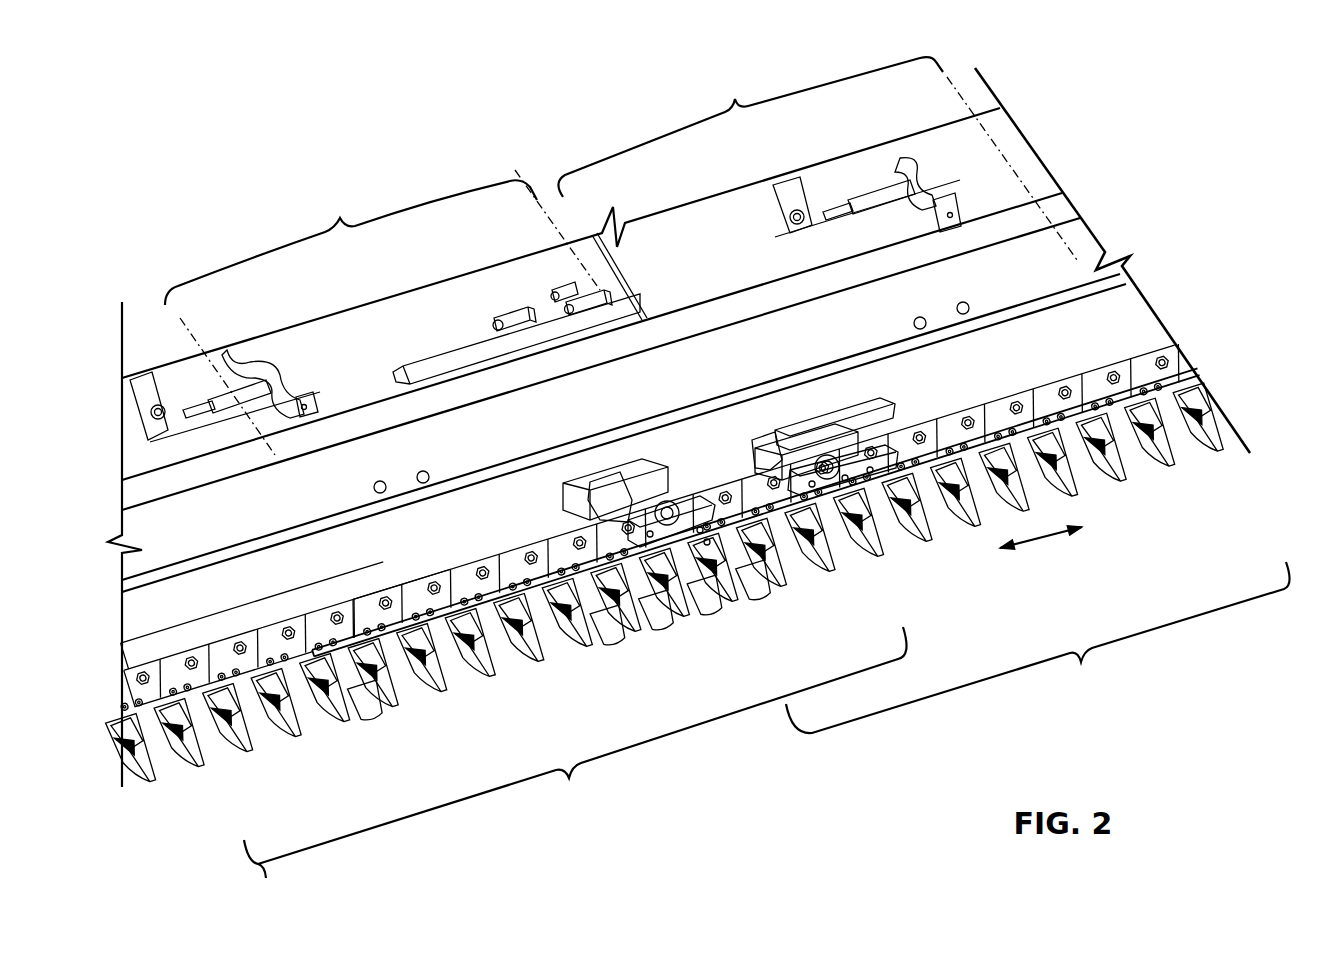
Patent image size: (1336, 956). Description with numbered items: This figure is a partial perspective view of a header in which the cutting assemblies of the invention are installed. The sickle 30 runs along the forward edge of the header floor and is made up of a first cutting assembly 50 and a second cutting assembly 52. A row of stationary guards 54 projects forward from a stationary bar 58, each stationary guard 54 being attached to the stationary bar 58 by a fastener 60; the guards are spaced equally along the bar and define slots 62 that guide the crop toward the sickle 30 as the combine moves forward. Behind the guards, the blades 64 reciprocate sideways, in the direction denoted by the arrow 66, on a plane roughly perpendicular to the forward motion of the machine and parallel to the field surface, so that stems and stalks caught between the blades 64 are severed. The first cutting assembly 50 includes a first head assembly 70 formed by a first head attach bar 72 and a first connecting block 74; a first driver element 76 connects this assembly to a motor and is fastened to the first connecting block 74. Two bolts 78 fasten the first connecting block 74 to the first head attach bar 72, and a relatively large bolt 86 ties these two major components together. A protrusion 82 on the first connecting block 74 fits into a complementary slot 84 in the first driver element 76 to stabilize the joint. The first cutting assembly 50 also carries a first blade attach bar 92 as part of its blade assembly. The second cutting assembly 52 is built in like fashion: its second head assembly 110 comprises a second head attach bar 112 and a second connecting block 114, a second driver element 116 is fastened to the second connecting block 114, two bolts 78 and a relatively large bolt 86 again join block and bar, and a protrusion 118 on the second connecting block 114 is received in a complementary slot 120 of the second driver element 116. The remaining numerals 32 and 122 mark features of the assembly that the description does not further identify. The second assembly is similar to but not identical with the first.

The sickle 30 is at (160, 745).
The cutterbar mounting plate 32 is at (208, 662).
The first cutting assembly 50 is at (1038, 647).
The second cutting assembly 52 is at (575, 752).
The stationary guard 54 is at (385, 703).
The stationary bar 58 is at (463, 577).
The fastener 60 is at (522, 528).
The slot 62 is at (609, 642).
The blade 64 is at (260, 708).
The arrow 66 is at (1042, 550).
The first head assembly 70 is at (750, 127).
The first head attach bar 72 is at (1005, 430).
The first connecting block 74 is at (840, 456).
The first driver element 76 is at (806, 420).
The bolt 78 is at (752, 588).
The protrusion 82 is at (829, 455).
The complementary slot 84 is at (758, 440).
The relatively large bolt 86 is at (566, 492).
The first blade attach bar 92 is at (1132, 393).
The second head assembly 110 is at (351, 242).
The second head attach bar 112 is at (424, 620).
The second connecting block 114 is at (628, 492).
The second driver element 116 is at (590, 485).
The protrusion 118 is at (655, 465).
The complementary slot 120 is at (652, 500).
The knife section end 122 is at (368, 714).